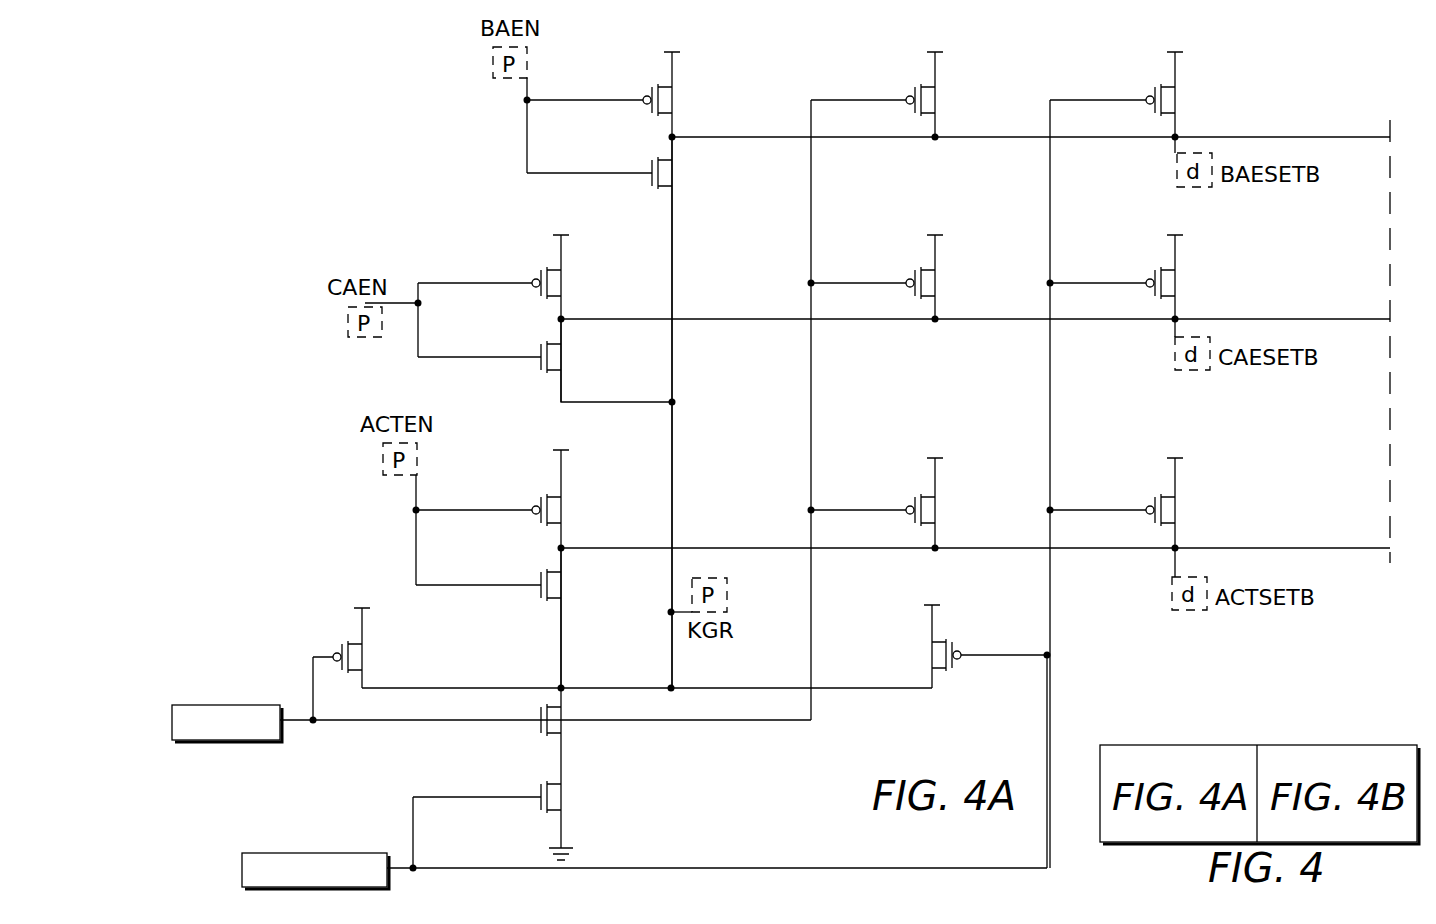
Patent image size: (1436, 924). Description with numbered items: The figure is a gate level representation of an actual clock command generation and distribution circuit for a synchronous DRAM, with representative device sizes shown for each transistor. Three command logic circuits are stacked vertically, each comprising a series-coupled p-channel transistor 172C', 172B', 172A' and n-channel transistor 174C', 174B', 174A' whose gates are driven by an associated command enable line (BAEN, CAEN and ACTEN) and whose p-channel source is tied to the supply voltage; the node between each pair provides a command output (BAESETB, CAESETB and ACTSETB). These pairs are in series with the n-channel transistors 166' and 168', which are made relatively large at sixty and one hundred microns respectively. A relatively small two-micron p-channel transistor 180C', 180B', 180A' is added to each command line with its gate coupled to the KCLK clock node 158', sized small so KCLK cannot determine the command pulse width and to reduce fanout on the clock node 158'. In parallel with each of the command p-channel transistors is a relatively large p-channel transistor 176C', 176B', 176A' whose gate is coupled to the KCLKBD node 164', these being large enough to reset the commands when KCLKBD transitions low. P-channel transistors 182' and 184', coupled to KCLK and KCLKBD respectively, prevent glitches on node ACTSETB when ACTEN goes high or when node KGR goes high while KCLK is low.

The p-channel transistor 172C' is at (639, 74).
The n-channel transistor 174C' is at (639, 408).
The p-channel transistor 172B' is at (529, 259).
The n-channel transistor 174B' is at (529, 360).
The p-channel transistor 172A' is at (528, 482).
The n-channel transistor 174A' is at (528, 618).
The p-channel transistor 180C' is at (906, 74).
The p-channel transistor 180B' is at (906, 257).
The p-channel transistor 180A' is at (906, 483).
The p-channel transistor 176C' is at (1152, 74).
The p-channel transistor 176B' is at (1152, 257).
The p-channel transistor 176A' is at (1152, 483).
The p-channel transistor 182' is at (350, 644).
The p-channel transistor 184' is at (955, 632).
The n-channel transistor 166' is at (549, 742).
The n-channel transistor 168' is at (534, 824).
The clock node 158' is at (230, 708).
The node 164' is at (318, 857).